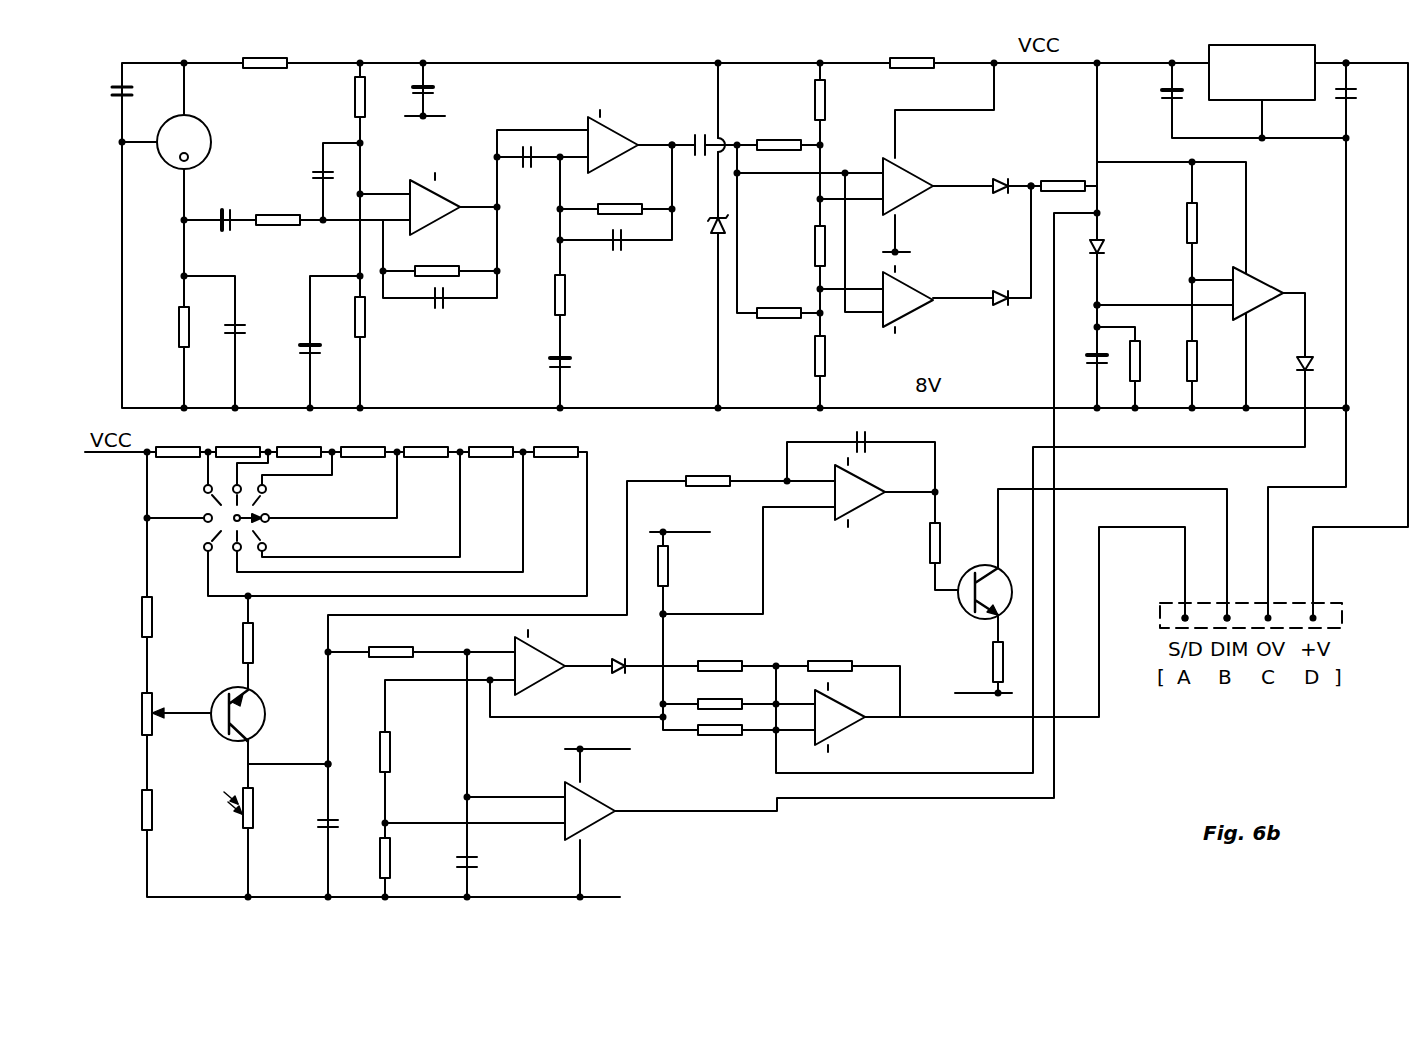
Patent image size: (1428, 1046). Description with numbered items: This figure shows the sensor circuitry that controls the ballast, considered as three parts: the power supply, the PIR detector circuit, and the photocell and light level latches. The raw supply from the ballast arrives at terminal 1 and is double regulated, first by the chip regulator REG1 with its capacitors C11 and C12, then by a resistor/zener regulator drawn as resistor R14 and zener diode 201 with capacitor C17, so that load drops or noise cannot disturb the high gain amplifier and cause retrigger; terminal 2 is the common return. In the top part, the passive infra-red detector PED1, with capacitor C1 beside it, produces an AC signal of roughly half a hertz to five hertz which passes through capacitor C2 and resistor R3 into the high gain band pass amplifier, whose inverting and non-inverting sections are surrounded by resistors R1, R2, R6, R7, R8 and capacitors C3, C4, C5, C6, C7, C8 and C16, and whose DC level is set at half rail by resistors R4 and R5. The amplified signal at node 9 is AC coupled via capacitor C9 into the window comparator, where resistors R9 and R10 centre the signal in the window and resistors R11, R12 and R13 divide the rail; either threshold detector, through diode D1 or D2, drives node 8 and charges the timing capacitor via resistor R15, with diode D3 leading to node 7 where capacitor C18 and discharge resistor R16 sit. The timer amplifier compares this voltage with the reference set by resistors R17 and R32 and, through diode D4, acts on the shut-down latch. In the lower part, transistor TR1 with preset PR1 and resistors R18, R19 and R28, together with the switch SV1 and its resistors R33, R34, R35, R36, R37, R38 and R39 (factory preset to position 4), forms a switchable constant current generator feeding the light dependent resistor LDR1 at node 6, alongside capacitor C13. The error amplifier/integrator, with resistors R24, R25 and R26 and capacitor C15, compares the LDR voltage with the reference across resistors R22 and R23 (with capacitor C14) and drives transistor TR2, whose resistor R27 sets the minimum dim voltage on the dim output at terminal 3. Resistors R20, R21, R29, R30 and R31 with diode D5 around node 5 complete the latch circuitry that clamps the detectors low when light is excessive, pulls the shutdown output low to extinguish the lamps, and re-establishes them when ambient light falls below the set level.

The capacitor C1 is at (137, 85).
The passive infra-red detector PED1 is at (212, 142).
The resistor R2 is at (265, 77).
The resistor R4 is at (342, 97).
The capacitor C17 is at (444, 101).
The capacitor C2 is at (232, 216).
The resistor R3 is at (278, 233).
The capacitor C4 is at (307, 175).
The capacitor C3 is at (249, 325).
The resistor R1 is at (166, 327).
The capacitor C16 is at (293, 343).
The resistor R5 is at (375, 317).
The resistor R6 is at (437, 257).
The capacitor C5 is at (436, 310).
The capacitor C6 is at (521, 170).
The node 9 is at (670, 133).
The resistor R8 is at (620, 195).
The capacitor C8 is at (613, 251).
The resistor R7 is at (576, 295).
The capacitor C7 is at (576, 354).
The coupling capacitor C9 is at (701, 156).
The zener diode 201 is at (699, 235).
The resistor R9 is at (779, 132).
The resistor R10 is at (779, 326).
The resistor R11 is at (842, 100).
The resistor R12 is at (797, 246).
The resistor R13 is at (842, 356).
The resistor R14 is at (912, 76).
The diode D1 is at (999, 172).
The diode D2 is at (999, 284).
The node 8 is at (1027, 175).
The charging resistor R15 is at (1063, 175).
The diode D3 is at (1114, 248).
The node 7 is at (1088, 305).
The capacitor C18 is at (1089, 357).
The discharge resistor R16 is at (1155, 361).
The resistor R17 is at (1171, 223).
The resistor R32 is at (1214, 361).
The diode D4 is at (1287, 369).
The capacitor C11 is at (1158, 85).
The regulator REG1 is at (1267, 85).
The capacitor C12 is at (1366, 94).
The terminal 1 is at (1362, 50).
The terminal 2 is at (1356, 407).
The resistor R33 is at (178, 439).
The resistor R34 is at (238, 439).
The resistor R35 is at (299, 439).
The resistor R36 is at (363, 439).
The resistor R37 is at (426, 439).
The resistor R38 is at (490, 439).
The resistor R39 is at (556, 439).
The switch SV1 is at (253, 517).
The resistor R18 is at (169, 617).
The resistor R28 is at (225, 643).
The preset potentiometer PR1 is at (168, 710).
The transistor TR1 is at (257, 721).
The node 6 is at (337, 764).
The resistor R19 is at (169, 810).
The light dependent resistor LDR1 is at (216, 823).
The capacitor C13 is at (304, 829).
The resistor R25 is at (391, 639).
The resistor R22 is at (407, 752).
The resistor R23 is at (407, 858).
The capacitor C14 is at (488, 859).
The diode D5 is at (620, 651).
The resistor R21 is at (686, 546).
The node 5 is at (688, 602).
The resistor R24 is at (708, 468).
The resistor R20 is at (720, 653).
The resistor R29 is at (720, 692).
The resistor R30 is at (720, 742).
The resistor R31 is at (830, 653).
The capacitor C15 is at (872, 431).
The resistor R26 is at (957, 543).
The transistor TR2 is at (963, 597).
The resistor R27 is at (975, 668).
The switch position 4 is at (1176, 601).
The terminal 3 DIM 3 is at (1234, 601).